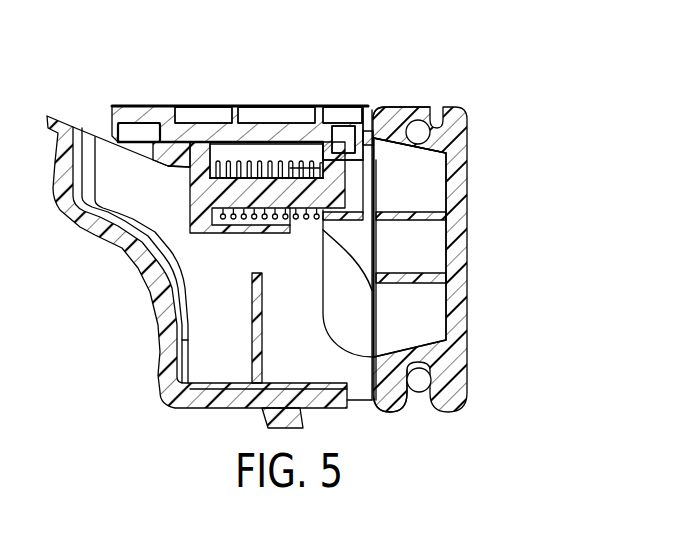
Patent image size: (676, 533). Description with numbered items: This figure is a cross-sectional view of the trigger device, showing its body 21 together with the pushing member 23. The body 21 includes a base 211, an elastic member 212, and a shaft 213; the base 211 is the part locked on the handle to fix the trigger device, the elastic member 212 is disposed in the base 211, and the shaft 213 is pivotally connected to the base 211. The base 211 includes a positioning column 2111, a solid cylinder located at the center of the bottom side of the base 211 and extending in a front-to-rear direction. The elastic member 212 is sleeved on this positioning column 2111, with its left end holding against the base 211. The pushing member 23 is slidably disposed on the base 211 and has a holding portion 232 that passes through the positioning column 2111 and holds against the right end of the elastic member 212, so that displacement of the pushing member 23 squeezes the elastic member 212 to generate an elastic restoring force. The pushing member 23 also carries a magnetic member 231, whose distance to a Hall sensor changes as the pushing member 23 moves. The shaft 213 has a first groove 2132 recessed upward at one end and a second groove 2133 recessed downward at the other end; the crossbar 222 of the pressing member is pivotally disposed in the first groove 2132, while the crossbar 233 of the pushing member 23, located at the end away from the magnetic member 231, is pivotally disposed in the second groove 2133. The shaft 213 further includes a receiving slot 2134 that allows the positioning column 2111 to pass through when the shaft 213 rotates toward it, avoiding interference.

The body 21 is at (390, 46).
The base 211 is at (253, 130).
The positioning column 2111 is at (207, 142).
The elastic member 212 is at (312, 130).
The shaft 213 is at (367, 108).
The pushing member 23 is at (224, 142).
The magnetic member 231 is at (142, 122).
The holding portion 232 is at (312, 224).
The crossbar 233 is at (432, 141).
The second groove 2133 is at (442, 109).
The receiving slot 2134 is at (427, 191).
The first groove 2132 is at (430, 360).
The crossbar 222 is at (431, 384).